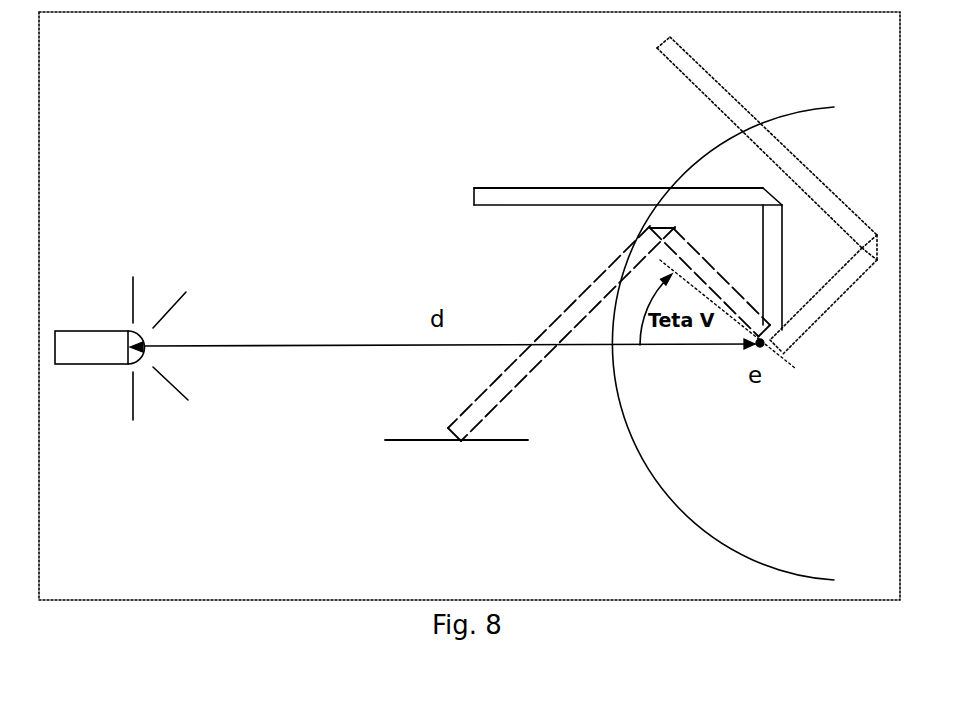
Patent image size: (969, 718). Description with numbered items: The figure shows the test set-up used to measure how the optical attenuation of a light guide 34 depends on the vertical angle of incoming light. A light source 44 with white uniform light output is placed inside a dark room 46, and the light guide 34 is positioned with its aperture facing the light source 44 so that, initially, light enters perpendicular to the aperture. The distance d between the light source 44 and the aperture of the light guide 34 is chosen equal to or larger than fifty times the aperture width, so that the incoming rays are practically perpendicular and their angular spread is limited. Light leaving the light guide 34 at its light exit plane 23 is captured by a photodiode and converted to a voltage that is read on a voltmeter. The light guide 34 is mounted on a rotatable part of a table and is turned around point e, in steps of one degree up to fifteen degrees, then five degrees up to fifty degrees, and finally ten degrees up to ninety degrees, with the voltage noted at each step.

The dark room 46 is at (80, 13).
The light source 44 is at (97, 347).
The light exit plane 23 is at (473, 195).
The light guide 34 is at (643, 197).